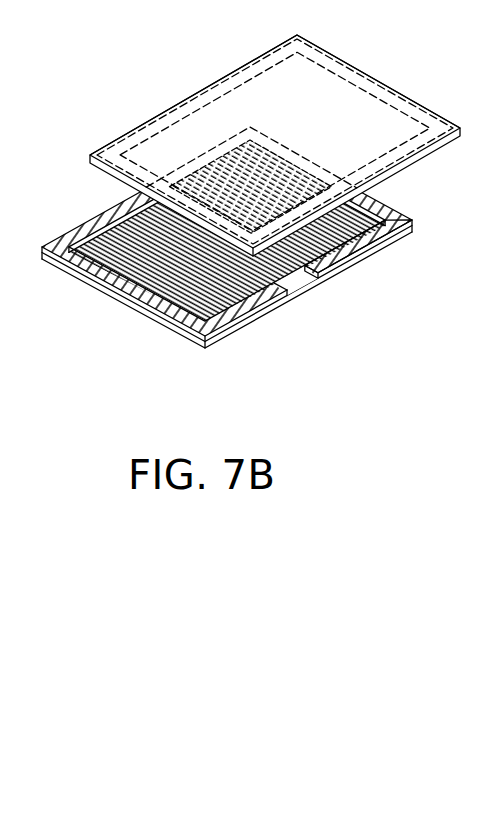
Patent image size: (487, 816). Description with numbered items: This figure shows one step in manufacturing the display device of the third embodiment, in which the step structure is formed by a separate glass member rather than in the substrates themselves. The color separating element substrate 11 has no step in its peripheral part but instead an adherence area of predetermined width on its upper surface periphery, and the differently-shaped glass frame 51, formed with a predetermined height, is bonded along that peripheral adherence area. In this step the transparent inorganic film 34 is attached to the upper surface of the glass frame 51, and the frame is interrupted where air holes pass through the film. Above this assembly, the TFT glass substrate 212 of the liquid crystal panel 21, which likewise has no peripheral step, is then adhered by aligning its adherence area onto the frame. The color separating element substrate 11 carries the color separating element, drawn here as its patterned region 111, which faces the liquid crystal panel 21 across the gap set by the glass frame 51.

The color separating element substrate 11 is at (163, 320).
The wiring lines 111 is at (145, 268).
The liquid crystal panel 21 is at (413, 106).
The TFT glass substrate 212 is at (352, 81).
The transparent inorganic film 34 is at (362, 247).
The differently-shaped glass frame 51 is at (77, 262).